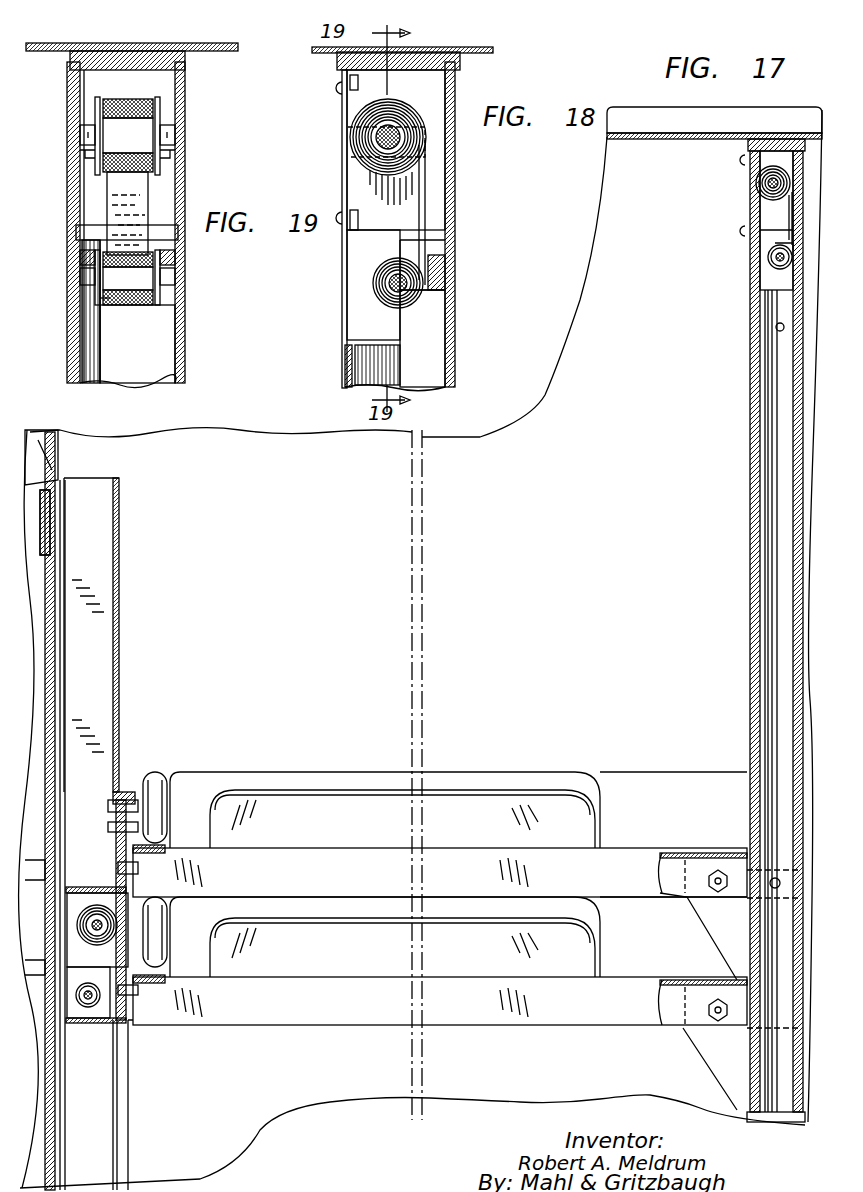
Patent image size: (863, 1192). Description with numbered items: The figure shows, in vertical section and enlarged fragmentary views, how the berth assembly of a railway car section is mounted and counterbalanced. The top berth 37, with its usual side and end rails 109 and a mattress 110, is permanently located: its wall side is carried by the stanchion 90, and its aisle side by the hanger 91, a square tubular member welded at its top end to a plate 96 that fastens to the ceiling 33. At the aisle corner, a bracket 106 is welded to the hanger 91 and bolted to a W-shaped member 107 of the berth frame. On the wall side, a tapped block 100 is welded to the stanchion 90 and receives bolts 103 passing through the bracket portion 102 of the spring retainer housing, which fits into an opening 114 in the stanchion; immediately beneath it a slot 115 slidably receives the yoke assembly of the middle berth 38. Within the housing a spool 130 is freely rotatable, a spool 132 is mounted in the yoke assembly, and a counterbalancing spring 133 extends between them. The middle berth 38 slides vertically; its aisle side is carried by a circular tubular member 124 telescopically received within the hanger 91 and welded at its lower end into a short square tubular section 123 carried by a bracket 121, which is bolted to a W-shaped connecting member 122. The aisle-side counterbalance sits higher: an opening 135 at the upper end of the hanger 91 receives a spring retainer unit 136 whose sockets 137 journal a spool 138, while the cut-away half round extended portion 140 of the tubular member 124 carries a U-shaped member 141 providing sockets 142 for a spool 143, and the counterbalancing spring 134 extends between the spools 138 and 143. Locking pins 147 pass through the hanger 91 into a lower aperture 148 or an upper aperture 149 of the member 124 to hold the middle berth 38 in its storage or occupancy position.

In FIG. 19, the ceiling 33 is at (222, 36).
In FIG. 18, the ceiling 33 is at (480, 48).
In FIG. 19, the plate 96 is at (138, 36).
In FIG. 18, the plate 96 is at (345, 62).
In FIG. 17, the plate 96 is at (770, 133).
In FIG. 19, the hanger 91 is at (185, 350).
In FIG. 18, the hanger 91 is at (455, 320).
In FIG. 17, the hanger 91 is at (752, 348).
In FIG. 19, the circular tubular member 124 is at (162, 372).
In FIG. 18, the circular tubular member 124 is at (428, 365).
In FIG. 17, the circular tubular member 124 is at (770, 382).
In FIG. 19, the half round extended portion 140 is at (160, 323).
In FIG. 18, the half round extended portion 140 is at (425, 315).
In FIG. 17, the half round extended portion 140 is at (785, 278).
In FIG. 19, the spool 138 is at (160, 105).
In FIG. 17, the spool 138 is at (758, 172).
In FIG. 19, the sockets 137 is at (175, 134).
In FIG. 18, the sockets 137 is at (340, 150).
In FIG. 19, the spring retainer unit 136 is at (84, 155).
In FIG. 18, the spring retainer unit 136 is at (440, 148).
In FIG. 19, the counterbalancing spring 134 is at (140, 200).
In FIG. 18, the counterbalancing spring 134 is at (425, 200).
In FIG. 17, the counterbalancing spring 134 is at (790, 212).
In FIG. 19, the U-shaped member 141 is at (82, 258).
In FIG. 18, the U-shaped member 141 is at (445, 268).
In FIG. 19, the sockets 142 is at (172, 260).
In FIG. 18, the sockets 142 is at (380, 278).
In FIG. 19, the spool 143 is at (100, 300).
In FIG. 17, the spool 143 is at (768, 258).
In FIG. 18, the bolts 103 is at (328, 133).
In FIG. 17, the bolts 103 is at (115, 835).
In FIG. 18, the opening 135 is at (352, 320).
In FIG. 17, the upper aperture 149 is at (775, 328).
In FIG. 17, the stanchion 90 is at (120, 659).
In FIG. 17, the tapped block 100 is at (122, 795).
In FIG. 17, the spool 130 is at (92, 890).
In FIG. 17, the counterbalancing spring 133 is at (84, 952).
In FIG. 17, the spool 132 is at (88, 1012).
In FIG. 17, the opening 114 is at (120, 1030).
In FIG. 17, the slot 115 is at (117, 1090).
In FIG. 17, the side and end rails 109 is at (240, 782).
In FIG. 17, the mattress 110 is at (620, 762).
In FIG. 17, the bracket portion 102 is at (160, 848).
In FIG. 17, the middle berth 38 is at (320, 1026).
In FIG. 17, the top berth 37 is at (672, 766).
In FIG. 17, the W-shaped member 107 is at (738, 860).
In FIG. 17, the brackets 106 is at (715, 920).
In FIG. 17, the lower aperture 148 is at (775, 878).
In FIG. 17, the locking pins 147 is at (745, 885).
In FIG. 17, the W-shaped connecting member 122 is at (740, 985).
In FIG. 17, the brackets 121 is at (700, 1040).
In FIG. 17, the square tubular section 123 is at (745, 1060).